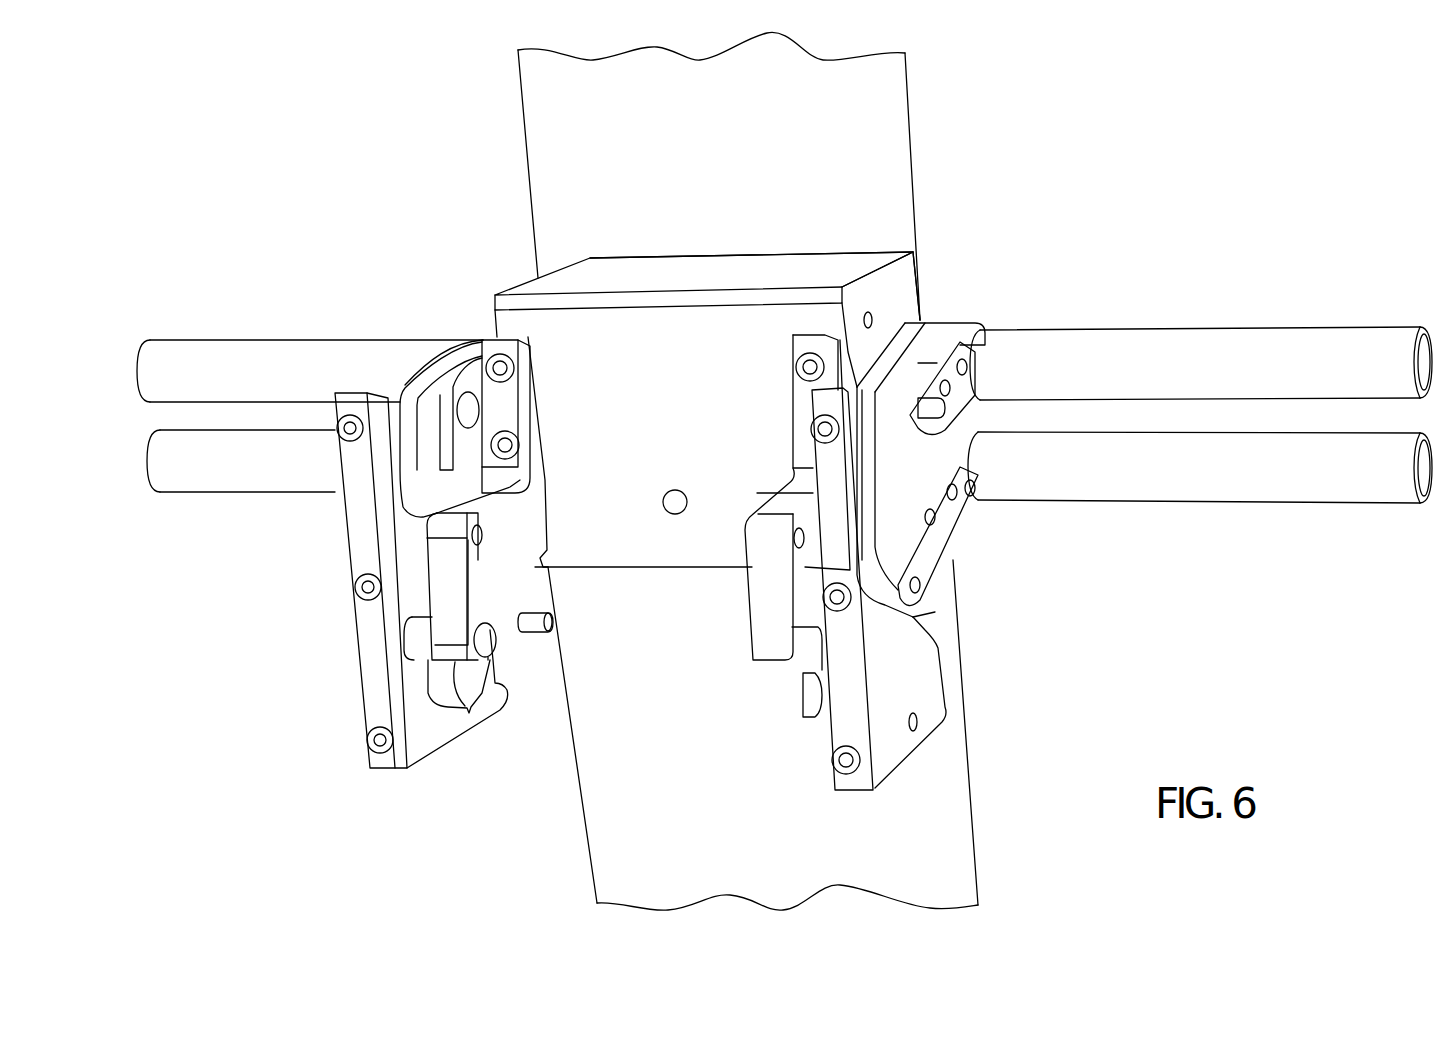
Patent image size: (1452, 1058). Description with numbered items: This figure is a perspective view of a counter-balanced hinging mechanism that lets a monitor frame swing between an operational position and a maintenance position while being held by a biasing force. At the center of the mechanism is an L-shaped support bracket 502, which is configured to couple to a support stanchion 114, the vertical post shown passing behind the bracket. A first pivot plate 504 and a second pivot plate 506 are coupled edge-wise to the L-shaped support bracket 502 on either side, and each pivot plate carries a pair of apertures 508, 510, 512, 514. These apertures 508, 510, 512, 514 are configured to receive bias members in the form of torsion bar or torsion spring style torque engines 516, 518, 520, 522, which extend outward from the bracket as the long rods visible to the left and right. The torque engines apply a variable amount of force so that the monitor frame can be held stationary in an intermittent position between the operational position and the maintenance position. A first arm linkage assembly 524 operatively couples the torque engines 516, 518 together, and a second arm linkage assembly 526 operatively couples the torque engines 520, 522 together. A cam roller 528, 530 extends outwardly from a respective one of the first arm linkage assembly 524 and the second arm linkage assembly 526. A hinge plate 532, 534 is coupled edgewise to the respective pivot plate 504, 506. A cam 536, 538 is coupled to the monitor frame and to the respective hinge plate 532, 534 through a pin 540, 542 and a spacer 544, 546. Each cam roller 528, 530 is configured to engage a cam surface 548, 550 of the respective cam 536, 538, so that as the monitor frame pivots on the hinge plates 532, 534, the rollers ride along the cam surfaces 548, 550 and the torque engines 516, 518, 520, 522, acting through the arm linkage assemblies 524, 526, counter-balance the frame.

The support stanchion 114 is at (745, 180).
The L-shaped support bracket 502 is at (922, 290).
The first pivot plate 504 is at (490, 318).
The second pivot plate 506 is at (920, 265).
The aperture 508 is at (935, 320).
The aperture 510 is at (945, 410).
The aperture 512 is at (483, 338).
The aperture 514 is at (340, 510).
The torque engine 516 is at (1215, 330).
The torque engine 518 is at (1232, 432).
The torque engine 520 is at (240, 340).
The torque engine 522 is at (238, 495).
The first arm linkage assembly 524 is at (955, 530).
The second arm linkage assembly 526 is at (335, 340).
The cam roller 528 is at (935, 585).
The cam roller 530 is at (350, 570).
The hinge plate 532 is at (772, 665).
The hinge plate 534 is at (508, 630).
The cam 536 is at (880, 782).
The cam 538 is at (420, 760).
The pin 540 is at (915, 635).
The pin 542 is at (555, 625).
The spacer 544 is at (805, 700).
The spacer 546 is at (420, 645).
The cam surface 548 is at (930, 613).
The cam surface 550 is at (420, 615).